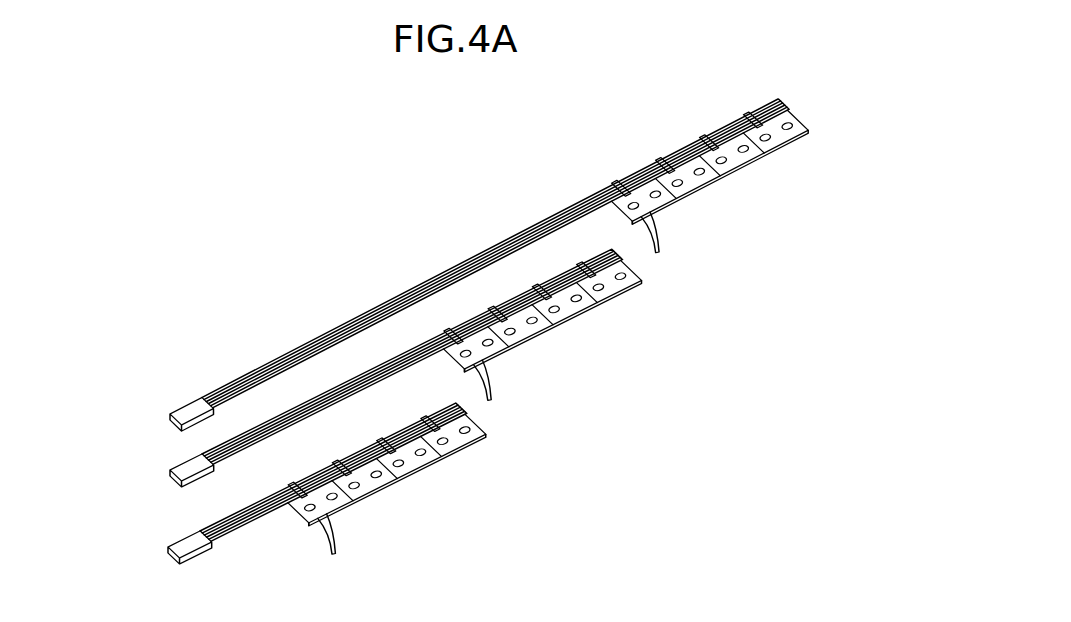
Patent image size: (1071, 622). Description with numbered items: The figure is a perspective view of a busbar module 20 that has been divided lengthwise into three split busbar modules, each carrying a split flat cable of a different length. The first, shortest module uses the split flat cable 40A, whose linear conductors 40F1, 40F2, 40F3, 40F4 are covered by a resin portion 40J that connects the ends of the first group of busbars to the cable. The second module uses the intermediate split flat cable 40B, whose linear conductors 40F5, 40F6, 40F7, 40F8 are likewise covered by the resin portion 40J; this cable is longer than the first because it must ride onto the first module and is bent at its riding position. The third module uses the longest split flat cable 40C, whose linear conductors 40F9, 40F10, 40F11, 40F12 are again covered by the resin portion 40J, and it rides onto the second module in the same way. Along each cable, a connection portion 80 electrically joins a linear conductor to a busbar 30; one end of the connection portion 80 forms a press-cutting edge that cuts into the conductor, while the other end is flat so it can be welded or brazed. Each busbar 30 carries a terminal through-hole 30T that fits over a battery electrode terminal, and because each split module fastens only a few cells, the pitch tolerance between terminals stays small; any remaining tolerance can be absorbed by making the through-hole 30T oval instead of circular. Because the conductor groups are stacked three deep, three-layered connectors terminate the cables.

The busbar module 20 is at (478, 168).
The split flat cable 40A is at (222, 520).
The split flat cable 40B is at (206, 462).
The split flat cable 40C is at (228, 383).
The linear conductor 40F1 is at (337, 475).
The linear conductor 40F2 is at (335, 473).
The linear conductor 40F3 is at (333, 471).
The linear conductor 40F4 is at (265, 508).
The linear conductor 40F5 is at (415, 359).
The linear conductor 40F6 is at (413, 357).
The linear conductor 40F7 is at (411, 355).
The linear conductor 40F8 is at (231, 452).
The linear conductor 40F9 is at (499, 256).
The linear conductor 40F10 is at (496, 254).
The linear conductor 40F11 is at (494, 252).
The linear conductor 40F12 is at (283, 365).
The resin portion 40J is at (316, 525).
The busbar 30 is at (466, 508).
The terminal through-hole 30T is at (348, 540).
The connection portion 80 is at (743, 85).